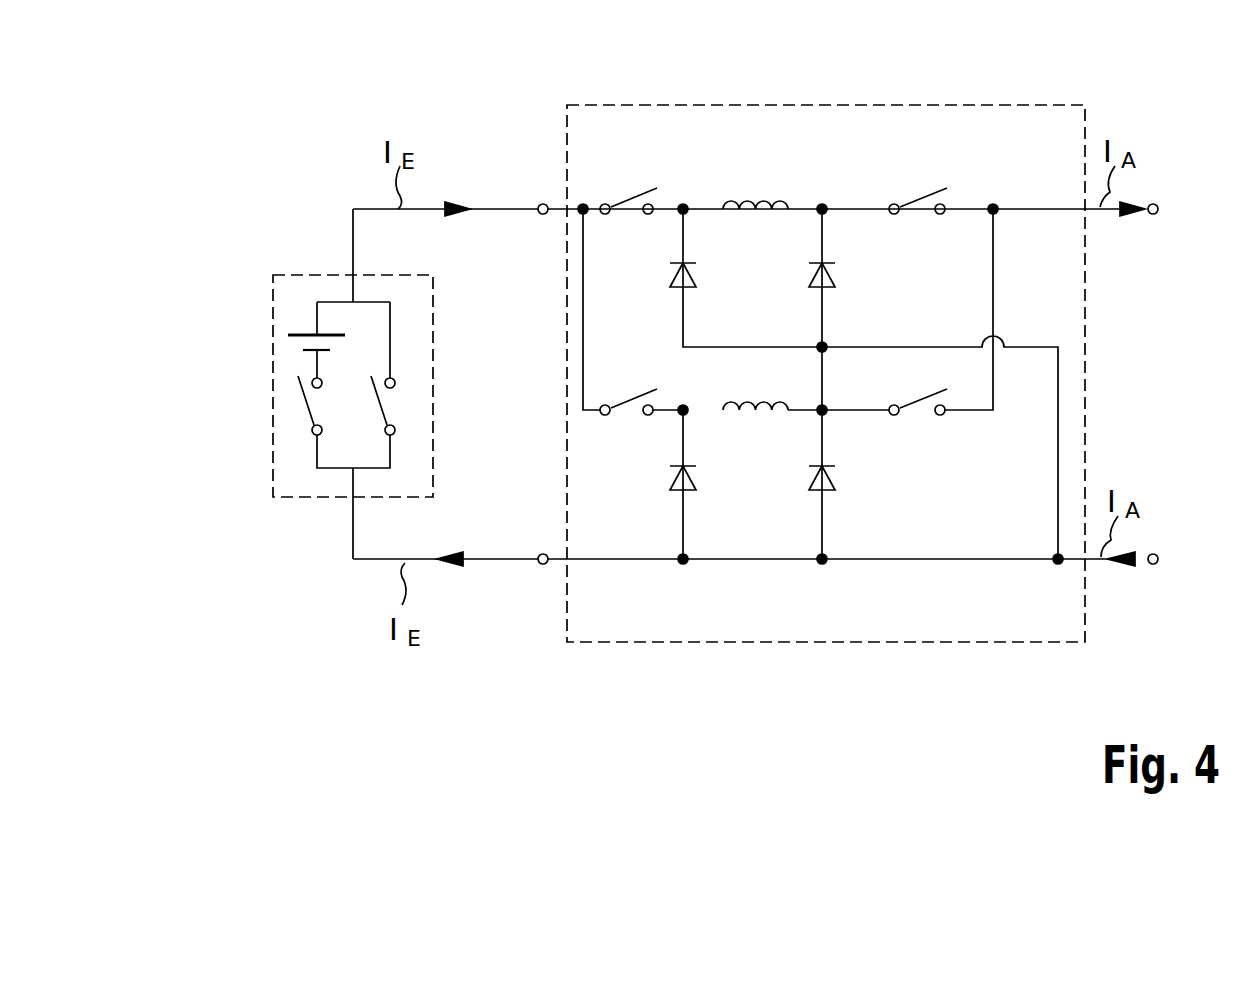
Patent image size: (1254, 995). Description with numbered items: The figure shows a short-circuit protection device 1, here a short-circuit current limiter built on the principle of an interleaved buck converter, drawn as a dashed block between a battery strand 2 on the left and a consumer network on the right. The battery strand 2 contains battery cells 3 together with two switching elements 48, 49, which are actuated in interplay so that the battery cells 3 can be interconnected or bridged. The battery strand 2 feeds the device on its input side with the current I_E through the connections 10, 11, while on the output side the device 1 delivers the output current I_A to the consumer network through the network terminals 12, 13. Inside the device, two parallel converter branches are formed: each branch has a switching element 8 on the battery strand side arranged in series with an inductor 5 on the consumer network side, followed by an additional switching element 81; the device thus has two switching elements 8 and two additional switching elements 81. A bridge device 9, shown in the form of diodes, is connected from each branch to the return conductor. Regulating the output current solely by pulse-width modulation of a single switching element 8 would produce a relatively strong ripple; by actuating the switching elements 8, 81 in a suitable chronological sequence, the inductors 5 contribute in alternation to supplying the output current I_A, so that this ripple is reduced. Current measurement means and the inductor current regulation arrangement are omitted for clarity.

The short-circuit protection device 1 is at (982, 105).
The battery strand 2 is at (322, 497).
The battery cells 3 is at (290, 345).
The switching element 48 is at (300, 401).
The switching element 49 is at (380, 394).
The inductor 5 is at (775, 200).
The switching element 8 is at (628, 200).
The additional switching element 81 is at (921, 198).
The bridge device 9 is at (670, 271).
The connection 10 is at (543, 204).
The connection 11 is at (544, 566).
The network terminal 12 is at (1159, 209).
The network terminal 13 is at (1159, 559).